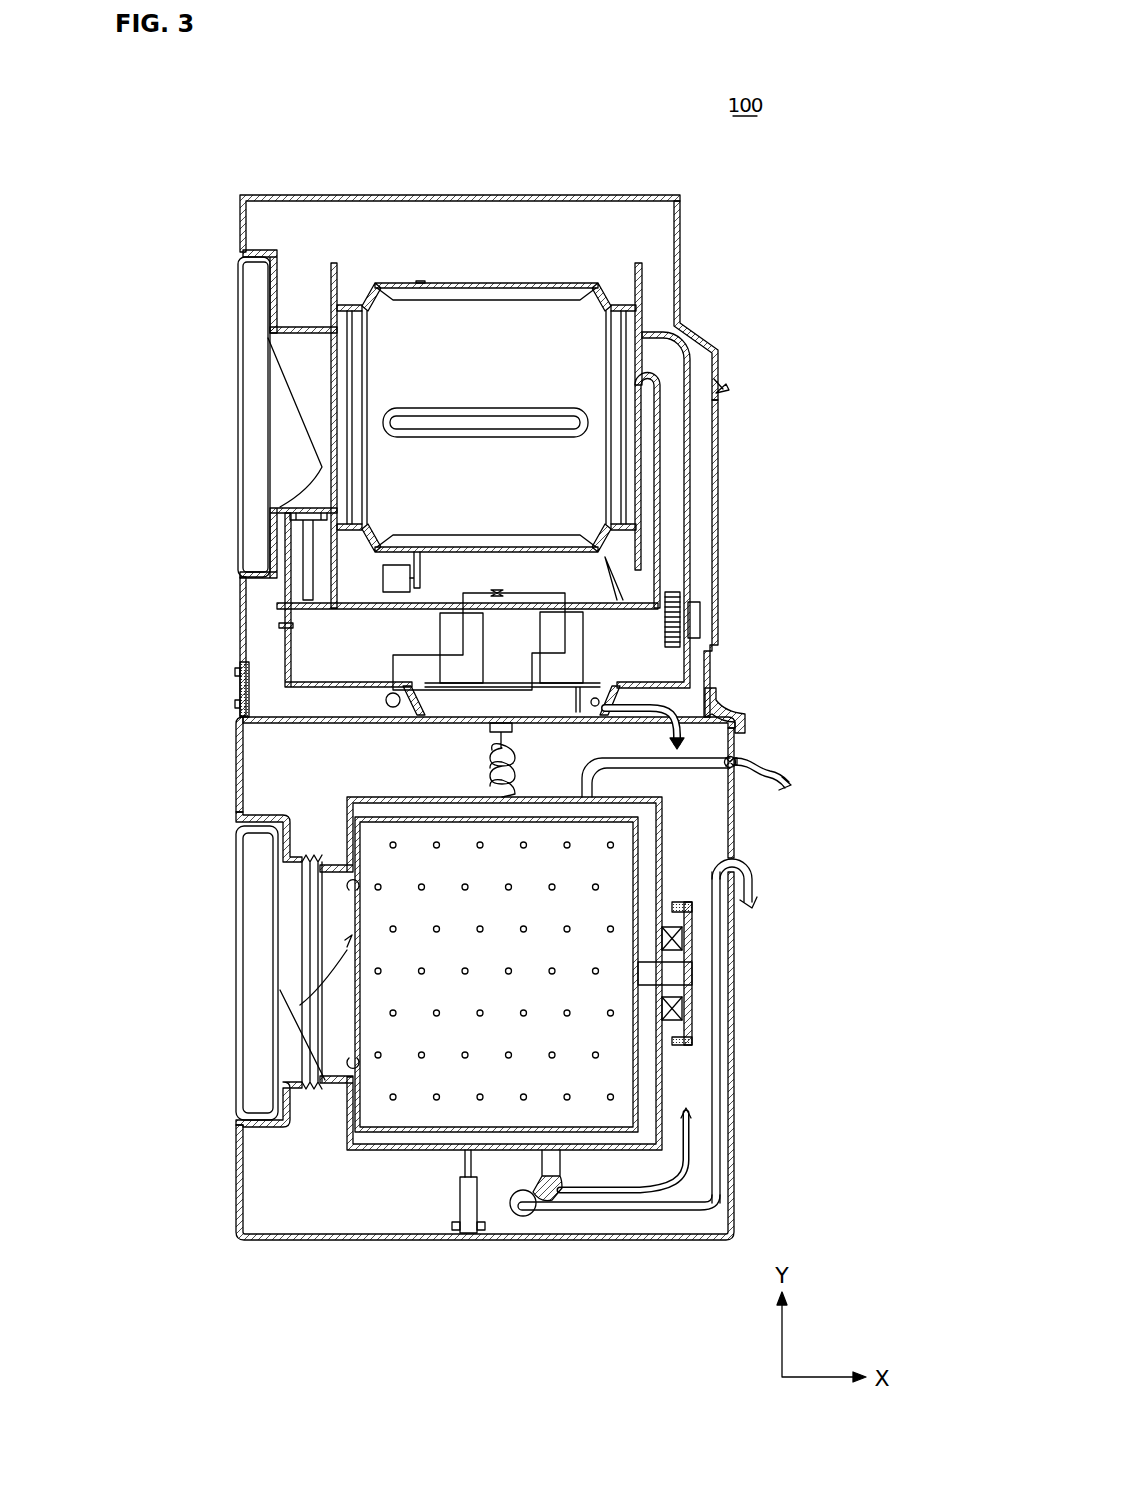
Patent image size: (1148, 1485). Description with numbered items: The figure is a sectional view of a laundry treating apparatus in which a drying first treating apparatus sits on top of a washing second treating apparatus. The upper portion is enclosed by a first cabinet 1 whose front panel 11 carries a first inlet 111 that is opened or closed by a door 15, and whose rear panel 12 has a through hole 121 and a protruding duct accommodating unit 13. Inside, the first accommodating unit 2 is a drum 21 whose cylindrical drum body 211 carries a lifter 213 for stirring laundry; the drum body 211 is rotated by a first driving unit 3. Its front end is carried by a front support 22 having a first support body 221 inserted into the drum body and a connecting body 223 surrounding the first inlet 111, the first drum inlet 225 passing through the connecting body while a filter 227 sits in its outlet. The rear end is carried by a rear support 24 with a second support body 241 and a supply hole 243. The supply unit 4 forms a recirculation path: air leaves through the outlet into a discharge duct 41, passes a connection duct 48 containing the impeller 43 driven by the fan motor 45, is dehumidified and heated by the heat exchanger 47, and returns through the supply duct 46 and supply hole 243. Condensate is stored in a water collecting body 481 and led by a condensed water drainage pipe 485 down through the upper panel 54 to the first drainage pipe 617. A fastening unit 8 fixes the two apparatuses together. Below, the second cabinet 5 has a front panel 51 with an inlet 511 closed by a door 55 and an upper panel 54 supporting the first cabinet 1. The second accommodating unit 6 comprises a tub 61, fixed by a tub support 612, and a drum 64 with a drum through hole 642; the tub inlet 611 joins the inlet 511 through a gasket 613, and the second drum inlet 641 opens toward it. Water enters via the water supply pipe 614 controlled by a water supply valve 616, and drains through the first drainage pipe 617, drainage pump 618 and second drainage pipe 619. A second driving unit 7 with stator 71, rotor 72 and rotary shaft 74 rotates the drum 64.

The first cabinet 1 is at (476, 432).
The front panel 11 is at (246, 222).
The rear panel 12 is at (680, 270).
The duct accommodating unit 13 is at (718, 487).
The through hole 121 is at (727, 388).
The first inlet 111 is at (270, 323).
The door 15 is at (258, 370).
The first drum inlet 225 is at (318, 382).
The filter 227 is at (305, 508).
The first accommodating unit 2 is at (486, 322).
The drum 21 is at (486, 311).
The drum body 211 is at (483, 283).
The lifter 213 is at (527, 420).
The front support 22 is at (538, 417).
The first support body 221 is at (385, 303).
The connecting body 223 is at (305, 318).
The rear support 24 is at (638, 275).
The second support body 241 is at (640, 352).
The supply hole 243 is at (650, 335).
The first driving unit 3 is at (383, 578).
The supply unit 4 is at (372, 615).
The discharge duct 41 is at (286, 592).
The connection duct 48 is at (285, 625).
The heat exchanger 47 is at (430, 632).
The water collecting body 481 is at (386, 698).
The supply duct 46 is at (690, 528).
The impeller 43 is at (684, 598).
The fan motor 45 is at (696, 625).
The condensed water drainage pipe 485 is at (665, 700).
The fastening unit 8 is at (720, 698).
The second cabinet 5 is at (431, 978).
The front panel 51 is at (238, 778).
The upper panel 54 is at (275, 723).
The door 55 is at (250, 928).
The inlet 511 is at (282, 885).
The gasket 613 is at (300, 832).
The tub inlet 611 is at (312, 1035).
The second drum inlet 641 is at (348, 940).
The second accommodating unit 6 is at (468, 1025).
The tub 61 is at (347, 1105).
The drum 64 is at (355, 1125).
The drum through hole 642 is at (597, 888).
The water supply pipe 614 is at (700, 760).
The water supply valve 616 is at (762, 770).
The second drainage pipe 619 is at (580, 1212).
The first drainage pipe 617 is at (510, 1215).
The drainage pump 618 is at (532, 1215).
The tub support 612 is at (462, 1215).
The second driving unit 7 is at (729, 973).
The stator 71 is at (672, 940).
The rotor 72 is at (665, 973).
The rotary shaft 74 is at (688, 987).